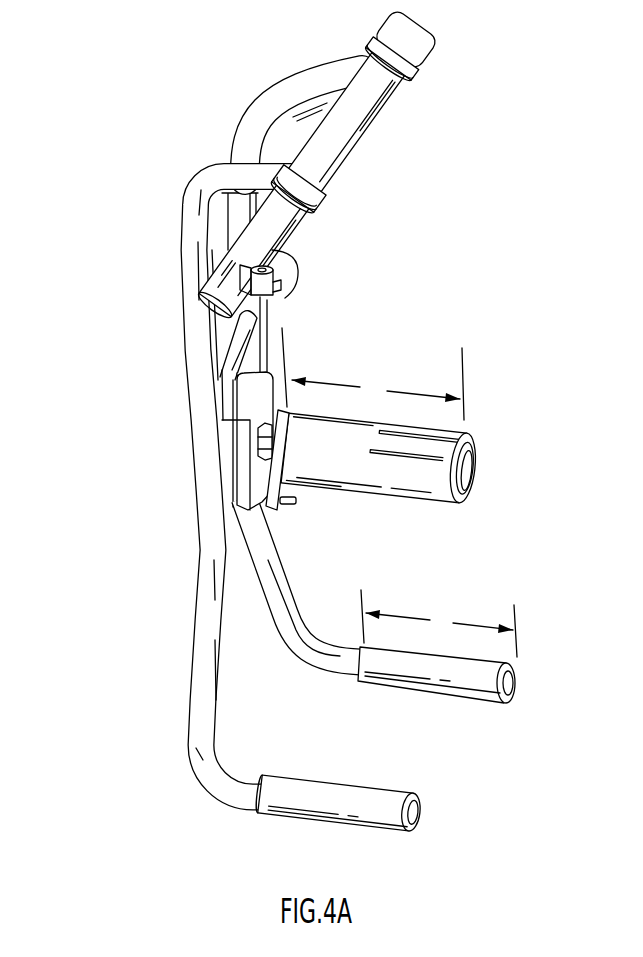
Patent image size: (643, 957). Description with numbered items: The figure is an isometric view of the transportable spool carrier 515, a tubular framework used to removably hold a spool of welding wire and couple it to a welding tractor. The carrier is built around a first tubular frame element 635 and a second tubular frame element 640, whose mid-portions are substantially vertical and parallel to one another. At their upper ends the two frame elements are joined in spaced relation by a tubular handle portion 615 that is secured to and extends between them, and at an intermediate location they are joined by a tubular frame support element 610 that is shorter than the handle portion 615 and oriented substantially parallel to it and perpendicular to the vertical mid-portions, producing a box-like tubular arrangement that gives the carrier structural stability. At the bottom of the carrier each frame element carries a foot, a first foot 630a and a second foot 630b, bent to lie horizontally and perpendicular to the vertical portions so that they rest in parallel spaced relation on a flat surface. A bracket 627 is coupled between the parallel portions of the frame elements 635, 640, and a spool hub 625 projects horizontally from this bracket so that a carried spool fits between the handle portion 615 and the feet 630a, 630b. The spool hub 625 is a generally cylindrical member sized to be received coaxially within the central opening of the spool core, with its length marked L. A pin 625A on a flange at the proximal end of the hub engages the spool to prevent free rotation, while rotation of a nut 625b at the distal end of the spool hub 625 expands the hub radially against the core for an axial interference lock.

The transportable spool carrier 515 is at (181, 121).
The tubular handle portion 615 is at (378, 83).
The tubular frame support element 610 is at (247, 327).
The bracket 627 is at (230, 449).
The spool hub 625 is at (410, 487).
The nut 625b is at (468, 468).
The pin 625A is at (297, 502).
The first tubular frame element 635 is at (297, 602).
The second tubular frame element 640 is at (207, 590).
The first foot 630a is at (516, 685).
The second foot 630b is at (418, 812).